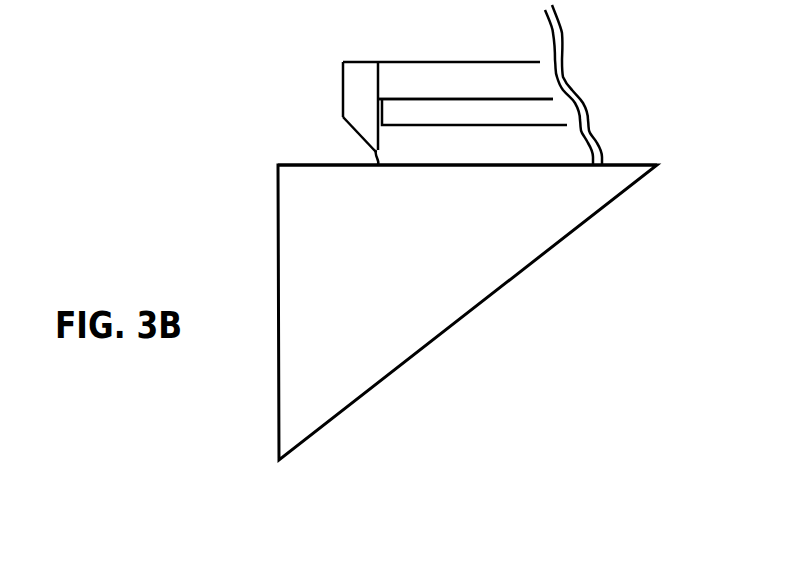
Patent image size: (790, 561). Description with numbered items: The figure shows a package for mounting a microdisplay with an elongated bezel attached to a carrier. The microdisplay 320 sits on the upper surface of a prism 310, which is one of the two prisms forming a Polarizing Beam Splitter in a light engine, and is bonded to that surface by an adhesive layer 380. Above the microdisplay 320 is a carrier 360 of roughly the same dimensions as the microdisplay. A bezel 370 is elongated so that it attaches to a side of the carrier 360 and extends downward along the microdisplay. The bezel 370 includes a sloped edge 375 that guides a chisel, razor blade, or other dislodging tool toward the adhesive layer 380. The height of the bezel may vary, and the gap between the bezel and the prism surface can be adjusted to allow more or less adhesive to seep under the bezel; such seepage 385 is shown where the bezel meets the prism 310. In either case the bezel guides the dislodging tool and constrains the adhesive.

The prism 310 is at (348, 338).
The microdisplay 320 is at (517, 121).
The carrier 360 is at (422, 67).
The bezel 370 is at (347, 75).
The sloped edge 375 is at (342, 120).
The adhesive layer 380 is at (471, 152).
The seepage 385 is at (373, 163).